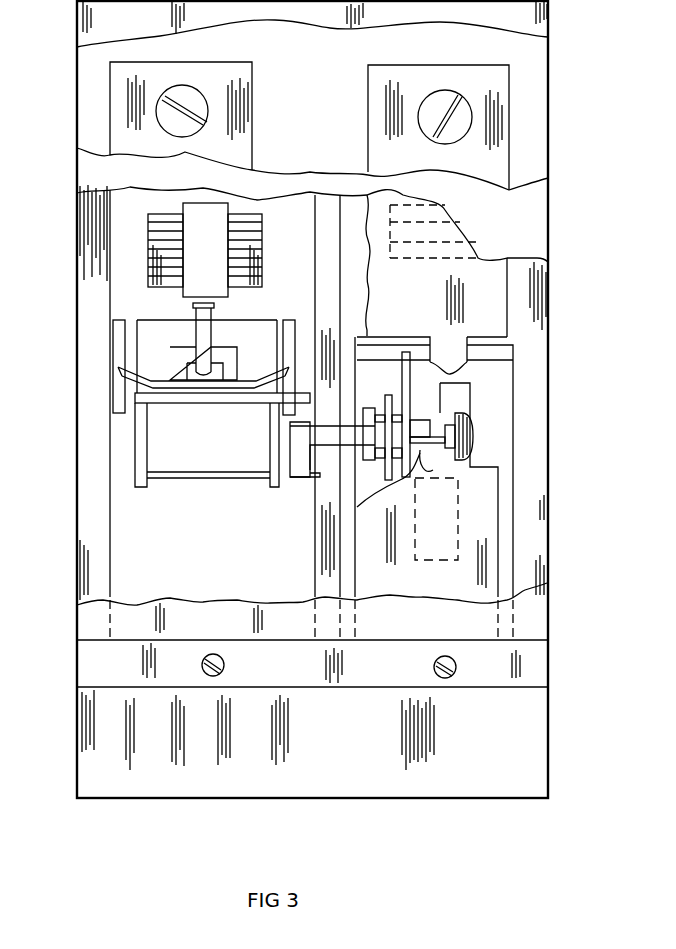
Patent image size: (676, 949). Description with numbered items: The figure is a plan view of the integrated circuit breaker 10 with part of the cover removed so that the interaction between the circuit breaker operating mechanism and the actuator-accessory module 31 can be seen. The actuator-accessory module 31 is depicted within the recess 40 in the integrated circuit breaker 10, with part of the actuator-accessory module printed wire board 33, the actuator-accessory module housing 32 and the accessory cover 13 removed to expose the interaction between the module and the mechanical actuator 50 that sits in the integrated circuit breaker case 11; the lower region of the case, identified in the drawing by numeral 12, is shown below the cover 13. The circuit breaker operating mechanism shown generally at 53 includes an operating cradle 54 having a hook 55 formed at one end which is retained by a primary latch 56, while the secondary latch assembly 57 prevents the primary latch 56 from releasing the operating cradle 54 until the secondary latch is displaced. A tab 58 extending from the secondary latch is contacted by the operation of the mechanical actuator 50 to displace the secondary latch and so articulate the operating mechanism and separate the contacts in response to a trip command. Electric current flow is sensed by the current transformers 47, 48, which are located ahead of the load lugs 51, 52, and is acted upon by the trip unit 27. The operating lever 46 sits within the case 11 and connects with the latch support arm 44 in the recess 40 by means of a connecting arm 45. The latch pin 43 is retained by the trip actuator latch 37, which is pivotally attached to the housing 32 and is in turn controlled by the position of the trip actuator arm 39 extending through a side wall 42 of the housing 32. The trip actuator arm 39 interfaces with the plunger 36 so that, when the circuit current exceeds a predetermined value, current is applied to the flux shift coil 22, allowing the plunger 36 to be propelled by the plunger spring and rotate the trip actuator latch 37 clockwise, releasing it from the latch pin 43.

The integrated circuit breaker 10 is at (534, 845).
The integrated circuit breaker case 11 is at (77, 513).
The bottom member 12 is at (349, 750).
The accessory cover 13 is at (483, 630).
The flux shift coil 22 is at (446, 560).
The trip unit printed wire board 27 is at (513, 268).
The actuator-accessory module 31 is at (505, 426).
The actuator-accessory module housing 32 is at (460, 400).
The actuator-accessory module printed wire board 33 is at (466, 433).
The plunger 36 is at (423, 468).
The trip actuator latch 37 is at (387, 395).
The trip actuator arm 39 is at (415, 427).
The recess 40 is at (511, 383).
The side wall 42 is at (405, 352).
The latch pin 43 is at (376, 446).
The latch support arm 44 is at (370, 407).
The connecting arm 45 is at (344, 446).
The operating lever 46 is at (301, 478).
The current transformer 47 is at (216, 255).
The current transformer 48 is at (430, 220).
The mechanical actuator 50 is at (283, 447).
The load lug 51 is at (228, 62).
The load lug 52 is at (459, 65).
The circuit breaker operating mechanism 53 is at (125, 297).
The operating cradle 54 is at (194, 330).
The hook 55 is at (205, 372).
The primary latch 56 is at (127, 390).
The secondary latch assembly 57 is at (218, 449).
The tab 58 is at (304, 358).